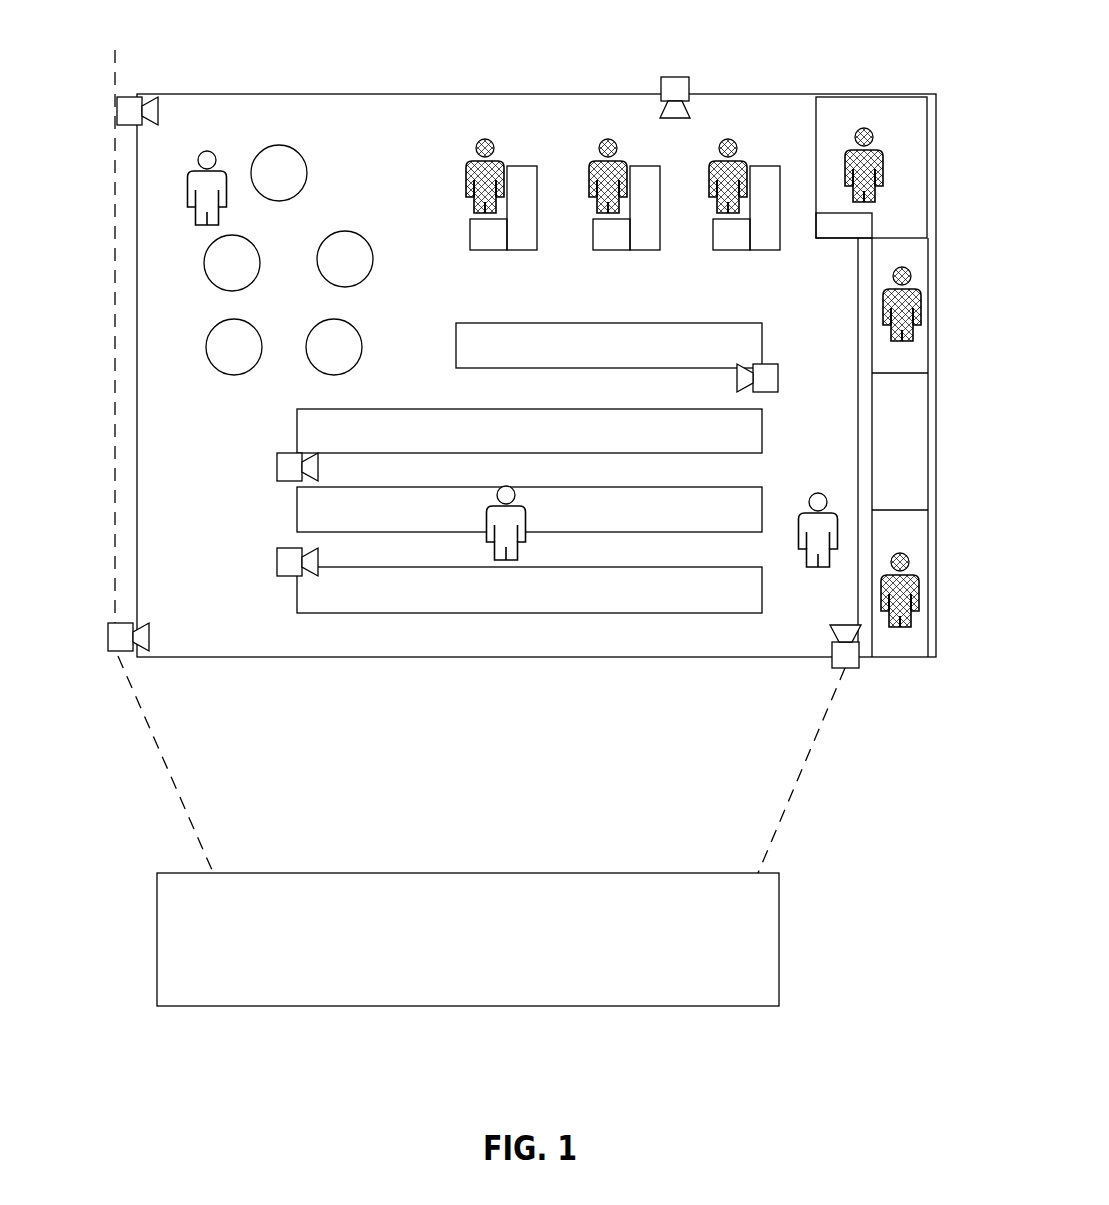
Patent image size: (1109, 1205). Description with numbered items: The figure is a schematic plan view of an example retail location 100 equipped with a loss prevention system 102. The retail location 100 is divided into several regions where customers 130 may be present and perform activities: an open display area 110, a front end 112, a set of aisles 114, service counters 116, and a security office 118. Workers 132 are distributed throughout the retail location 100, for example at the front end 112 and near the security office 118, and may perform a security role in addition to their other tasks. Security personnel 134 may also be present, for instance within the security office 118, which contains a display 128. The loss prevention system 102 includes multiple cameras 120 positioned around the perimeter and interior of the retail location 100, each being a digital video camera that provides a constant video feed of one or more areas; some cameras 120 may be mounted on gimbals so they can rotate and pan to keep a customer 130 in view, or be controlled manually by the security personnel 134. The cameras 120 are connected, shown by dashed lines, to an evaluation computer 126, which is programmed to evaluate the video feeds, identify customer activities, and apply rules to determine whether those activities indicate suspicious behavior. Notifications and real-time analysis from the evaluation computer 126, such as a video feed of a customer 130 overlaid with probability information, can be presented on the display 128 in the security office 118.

The retail location 100 is at (187, 92).
The loss prevention system 102 is at (133, 63).
The open display area 110 is at (273, 117).
The front end 112 is at (458, 116).
The aisles 114 is at (262, 531).
The service counters 116 is at (815, 586).
The security office 118 is at (859, 104).
The cameras 120 is at (113, 97).
The evaluation computer 126 is at (537, 873).
The display 128 is at (873, 224).
The customers 130 is at (211, 150).
The workers 132 is at (485, 139).
The security personnel 134 is at (866, 128).